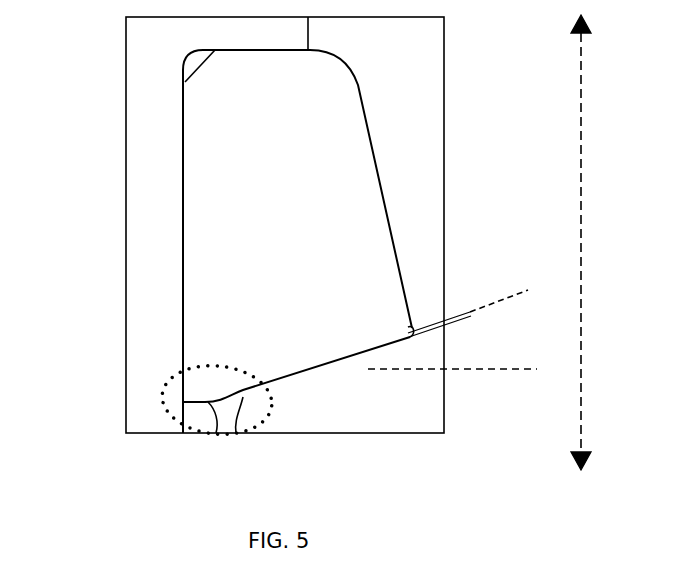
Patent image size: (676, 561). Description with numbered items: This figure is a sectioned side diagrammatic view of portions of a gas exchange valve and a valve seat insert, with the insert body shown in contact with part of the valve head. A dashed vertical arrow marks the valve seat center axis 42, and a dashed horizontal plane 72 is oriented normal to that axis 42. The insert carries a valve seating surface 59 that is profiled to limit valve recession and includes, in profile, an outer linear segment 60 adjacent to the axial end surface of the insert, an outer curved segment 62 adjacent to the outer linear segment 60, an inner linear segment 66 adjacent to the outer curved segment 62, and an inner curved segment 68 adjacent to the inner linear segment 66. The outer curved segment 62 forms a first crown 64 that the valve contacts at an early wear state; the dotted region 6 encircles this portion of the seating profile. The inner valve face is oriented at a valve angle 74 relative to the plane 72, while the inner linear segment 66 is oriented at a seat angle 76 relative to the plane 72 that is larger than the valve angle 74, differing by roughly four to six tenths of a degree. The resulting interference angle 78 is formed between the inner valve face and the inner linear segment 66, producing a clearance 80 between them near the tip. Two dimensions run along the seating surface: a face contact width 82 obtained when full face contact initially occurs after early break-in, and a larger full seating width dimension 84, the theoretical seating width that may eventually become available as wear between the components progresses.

The tip region of bar 6 is at (162, 401).
The valve seat center axis 42 is at (582, 262).
The valve seating surface 59 is at (292, 382).
The outer linear segment 60 is at (216, 433).
The outer curved segment 62 is at (236, 433).
The first crown 64 is at (261, 388).
The inner linear segment 66 is at (343, 358).
The inner curved segment 68 is at (410, 330).
The plane 72 is at (481, 371).
The valve angle 74 is at (509, 303).
The seat angle 76 is at (397, 343).
The interference angle 78 is at (478, 340).
The clearance 80 is at (410, 328).
The face contact width 82 is at (390, 297).
The full seating width dimension 84 is at (403, 282).